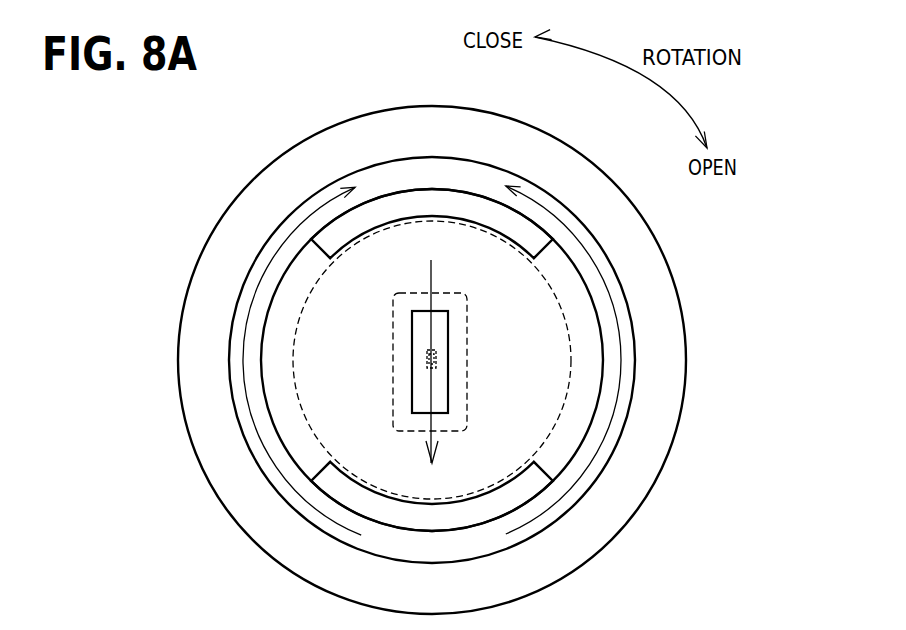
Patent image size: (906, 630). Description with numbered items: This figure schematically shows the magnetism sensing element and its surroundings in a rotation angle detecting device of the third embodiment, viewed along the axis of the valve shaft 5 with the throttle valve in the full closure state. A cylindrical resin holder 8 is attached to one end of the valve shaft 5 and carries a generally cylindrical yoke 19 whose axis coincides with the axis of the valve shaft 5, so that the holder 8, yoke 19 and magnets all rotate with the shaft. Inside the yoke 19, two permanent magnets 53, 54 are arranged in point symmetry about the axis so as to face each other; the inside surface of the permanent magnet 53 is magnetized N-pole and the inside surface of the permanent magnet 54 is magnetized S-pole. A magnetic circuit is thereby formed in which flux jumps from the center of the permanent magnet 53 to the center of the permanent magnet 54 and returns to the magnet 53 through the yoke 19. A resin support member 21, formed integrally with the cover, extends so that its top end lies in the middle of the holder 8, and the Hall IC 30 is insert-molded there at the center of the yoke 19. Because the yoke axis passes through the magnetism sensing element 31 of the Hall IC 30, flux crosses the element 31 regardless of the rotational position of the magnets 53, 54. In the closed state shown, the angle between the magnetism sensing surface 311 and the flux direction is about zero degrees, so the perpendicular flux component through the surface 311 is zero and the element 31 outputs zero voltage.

The holder 8 is at (272, 172).
The yoke 19 is at (383, 170).
The valve shaft 5 is at (552, 430).
The permanent magnet 53 is at (493, 213).
The permanent magnet 54 is at (492, 503).
The support member 21 is at (412, 405).
The Hall IC 30 is at (413, 312).
The magnetism sensing element 31 is at (434, 354).
The magnetism sensing surface 311 is at (437, 360).